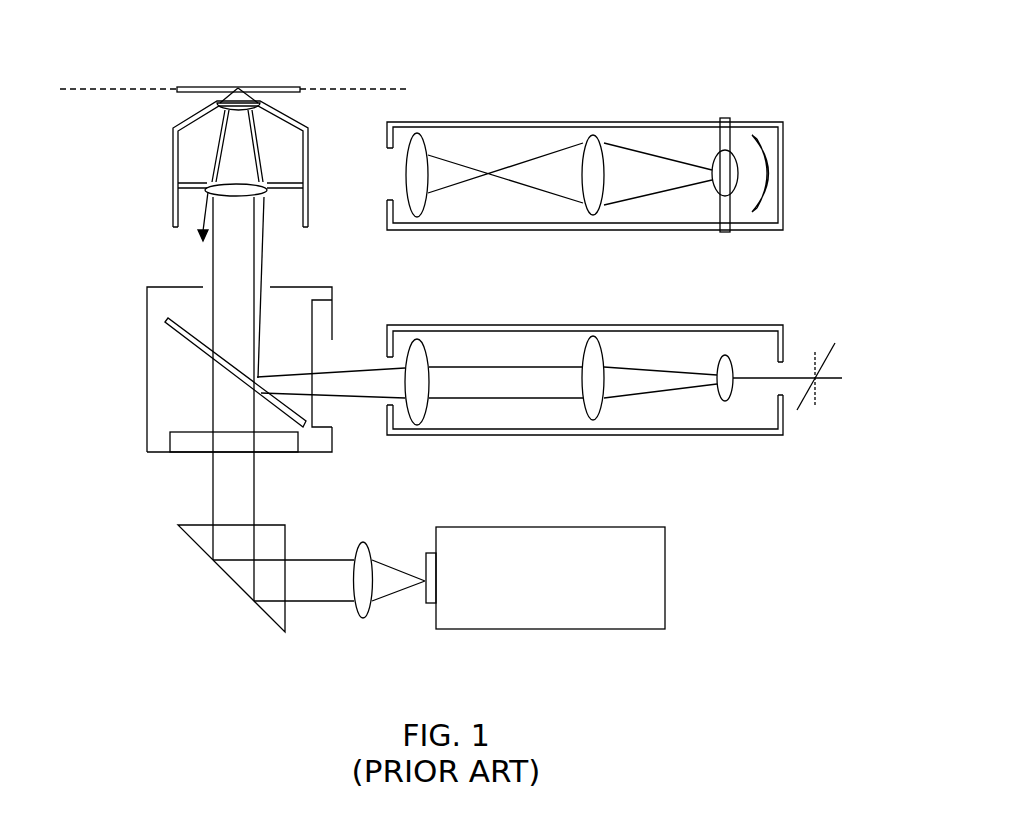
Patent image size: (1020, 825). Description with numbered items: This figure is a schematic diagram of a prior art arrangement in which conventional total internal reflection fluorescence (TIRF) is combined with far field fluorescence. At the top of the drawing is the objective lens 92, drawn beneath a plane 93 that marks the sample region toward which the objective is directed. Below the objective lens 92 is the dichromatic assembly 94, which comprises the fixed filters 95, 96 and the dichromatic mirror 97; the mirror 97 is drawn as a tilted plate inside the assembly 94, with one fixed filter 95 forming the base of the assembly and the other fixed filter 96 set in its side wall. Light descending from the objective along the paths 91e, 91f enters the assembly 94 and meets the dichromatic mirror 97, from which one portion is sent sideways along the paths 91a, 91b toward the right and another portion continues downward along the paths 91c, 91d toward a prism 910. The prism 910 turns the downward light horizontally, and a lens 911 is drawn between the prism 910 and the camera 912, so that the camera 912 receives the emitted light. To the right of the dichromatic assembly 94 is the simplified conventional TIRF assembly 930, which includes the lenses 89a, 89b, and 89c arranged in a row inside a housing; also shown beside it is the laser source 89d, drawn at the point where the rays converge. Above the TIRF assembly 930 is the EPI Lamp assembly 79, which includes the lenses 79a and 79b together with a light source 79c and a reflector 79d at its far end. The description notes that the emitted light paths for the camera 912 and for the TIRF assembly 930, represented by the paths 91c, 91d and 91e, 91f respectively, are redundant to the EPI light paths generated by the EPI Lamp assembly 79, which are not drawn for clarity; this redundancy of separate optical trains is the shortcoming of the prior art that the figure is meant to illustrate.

The focal plane / sample plane 93 is at (337, 87).
The objective lens 92 is at (150, 163).
The emitted light path 91e is at (217, 147).
The emitted light path 91f is at (266, 233).
The dichromatic assembly 94 is at (147, 318).
The fixed filter 95 is at (178, 430).
The fixed filter 96 is at (317, 313).
The dichromatic mirror 97 is at (188, 330).
The light beam 91a is at (343, 368).
The light beam 91b is at (347, 397).
The emitted light path 91c is at (212, 482).
The emitted light path 91d is at (256, 482).
The prism 910 is at (263, 612).
The collimating lens 911 is at (363, 618).
The camera 912 is at (563, 630).
The EPI Lamp assembly 79 is at (767, 118).
The lens 79a is at (418, 127).
The lens 79b is at (593, 130).
The light source 79c is at (725, 118).
The reflector 79d is at (770, 172).
The conventional TIRF assembly 930 is at (662, 325).
The lens 89a is at (418, 427).
The lens 89b is at (593, 430).
The lens 89c is at (727, 403).
The laser source 89d is at (805, 397).